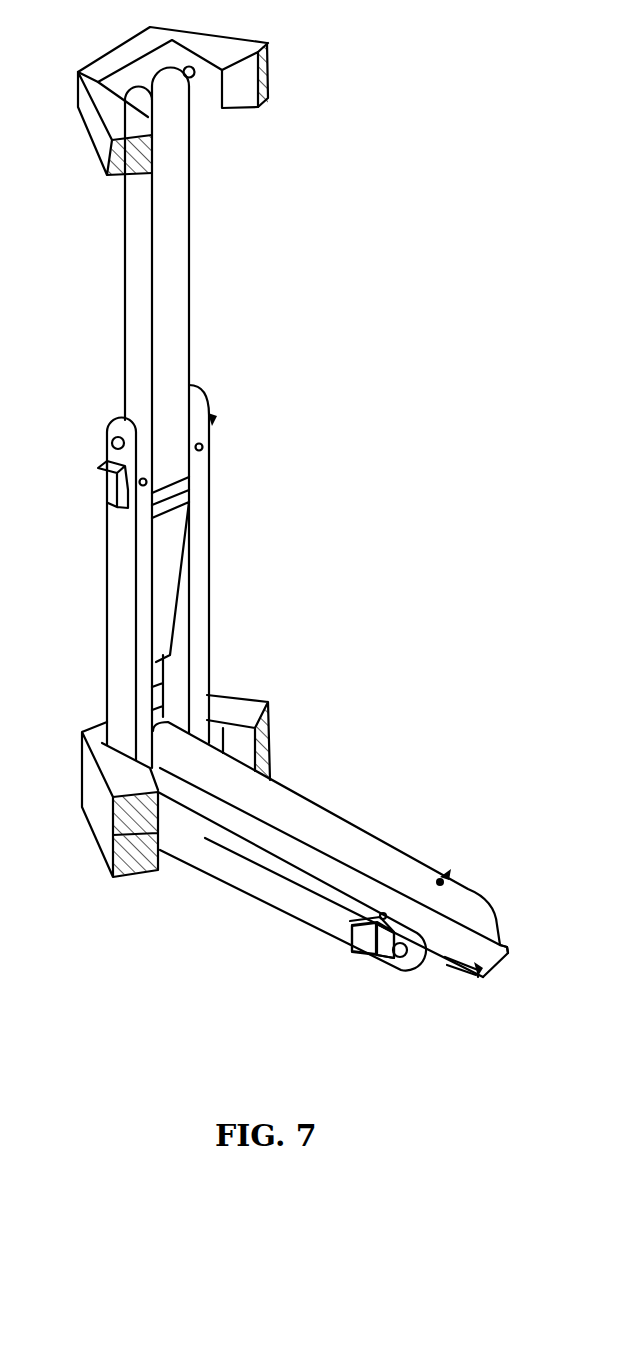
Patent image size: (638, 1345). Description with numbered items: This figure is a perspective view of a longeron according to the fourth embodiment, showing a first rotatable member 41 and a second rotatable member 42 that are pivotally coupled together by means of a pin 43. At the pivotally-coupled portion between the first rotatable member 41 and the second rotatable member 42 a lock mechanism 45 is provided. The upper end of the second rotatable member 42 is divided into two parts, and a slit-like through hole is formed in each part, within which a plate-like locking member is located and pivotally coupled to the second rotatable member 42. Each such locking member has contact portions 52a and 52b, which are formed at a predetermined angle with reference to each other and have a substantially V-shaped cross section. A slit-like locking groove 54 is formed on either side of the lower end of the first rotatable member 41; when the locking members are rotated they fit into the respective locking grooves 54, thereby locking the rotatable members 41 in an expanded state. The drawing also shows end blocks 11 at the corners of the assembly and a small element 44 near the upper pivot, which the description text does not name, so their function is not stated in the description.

The corner bracket 11 is at (255, 38).
The first rotatable member 41 is at (190, 292).
The second rotatable member 42 is at (208, 630).
The pin 43 is at (108, 438).
The pin 44 is at (193, 80).
The lock mechanism 45 is at (217, 452).
The contact portion 52a is at (356, 948).
The contact portion 52b is at (385, 957).
The locking groove 54 is at (503, 953).